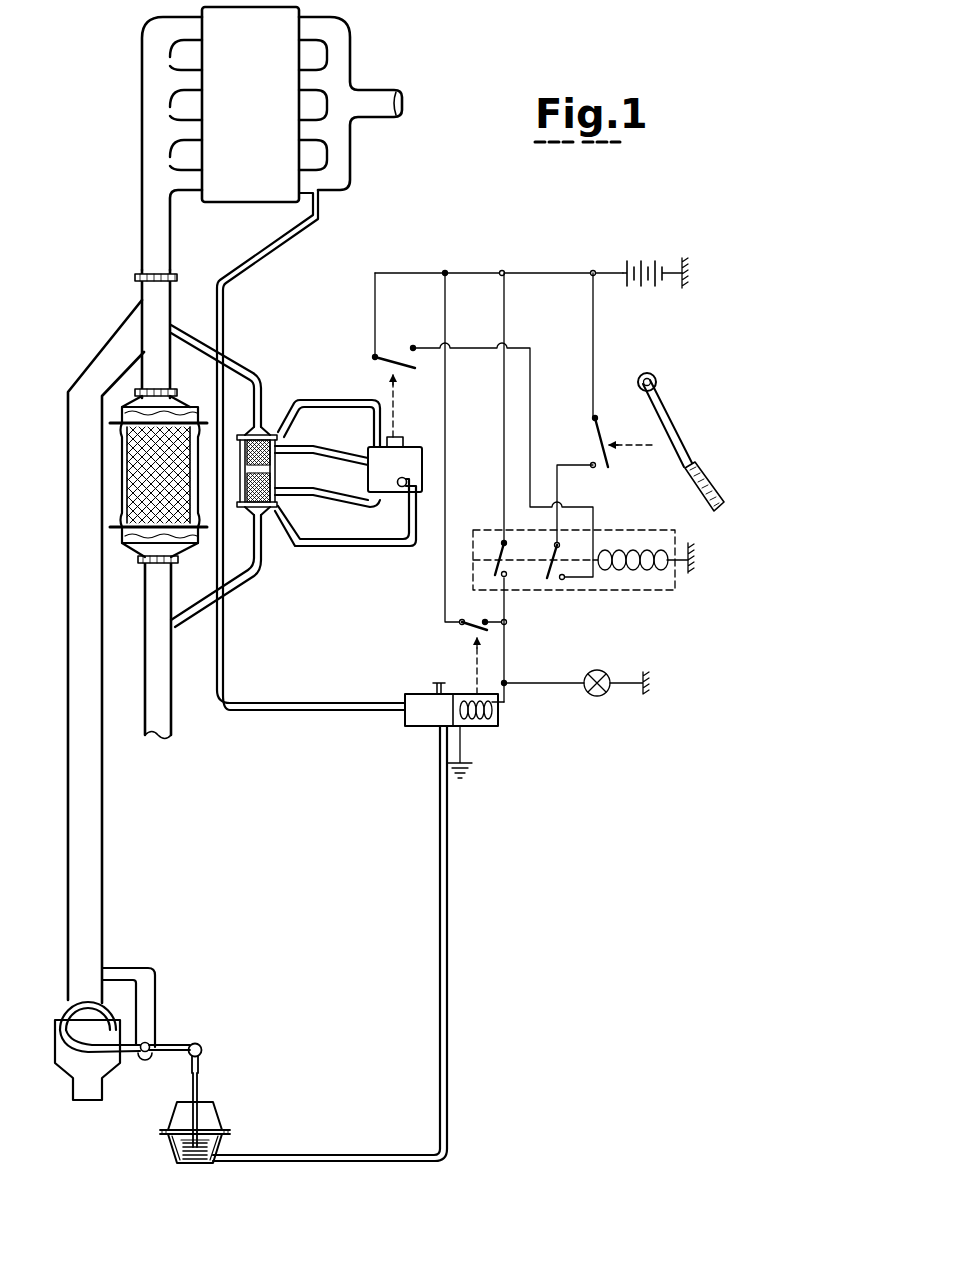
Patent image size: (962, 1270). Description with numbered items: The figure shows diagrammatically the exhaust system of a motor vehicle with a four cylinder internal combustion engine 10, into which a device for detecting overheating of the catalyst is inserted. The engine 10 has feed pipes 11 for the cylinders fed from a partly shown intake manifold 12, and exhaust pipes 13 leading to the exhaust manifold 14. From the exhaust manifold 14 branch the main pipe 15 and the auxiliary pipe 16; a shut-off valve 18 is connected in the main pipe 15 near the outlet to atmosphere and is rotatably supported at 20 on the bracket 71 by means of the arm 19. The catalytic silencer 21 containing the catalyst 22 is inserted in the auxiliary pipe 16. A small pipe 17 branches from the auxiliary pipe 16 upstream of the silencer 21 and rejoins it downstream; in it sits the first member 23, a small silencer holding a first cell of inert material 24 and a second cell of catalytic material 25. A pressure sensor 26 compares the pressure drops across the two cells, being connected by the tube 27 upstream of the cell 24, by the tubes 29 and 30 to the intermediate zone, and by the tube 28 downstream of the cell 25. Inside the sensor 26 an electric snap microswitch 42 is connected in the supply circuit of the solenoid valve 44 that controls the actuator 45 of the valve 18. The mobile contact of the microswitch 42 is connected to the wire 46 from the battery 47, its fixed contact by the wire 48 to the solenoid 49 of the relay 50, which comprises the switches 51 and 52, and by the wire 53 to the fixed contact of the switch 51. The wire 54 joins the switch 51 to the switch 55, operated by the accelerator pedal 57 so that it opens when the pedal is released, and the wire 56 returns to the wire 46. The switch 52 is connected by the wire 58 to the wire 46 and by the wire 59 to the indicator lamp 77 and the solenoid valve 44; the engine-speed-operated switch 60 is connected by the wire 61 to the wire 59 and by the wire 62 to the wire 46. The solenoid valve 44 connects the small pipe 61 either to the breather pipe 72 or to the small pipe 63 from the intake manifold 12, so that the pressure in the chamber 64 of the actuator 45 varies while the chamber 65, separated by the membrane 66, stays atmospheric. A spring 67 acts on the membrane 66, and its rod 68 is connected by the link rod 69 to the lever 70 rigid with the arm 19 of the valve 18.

The internal combustion engine 10 is at (249, 208).
The feed pipes 11 is at (334, 173).
The intake manifold 12 is at (380, 98).
The exhaust pipes 13 is at (142, 47).
The exhaust manifold 14 is at (142, 235).
The main pipe 15 is at (96, 366).
The auxiliary pipe 16 is at (163, 366).
The small pipe 17 is at (242, 366).
The shut-off valve 18 is at (87, 1001).
The arm 19 is at (95, 1045).
The rotatable support 20 is at (150, 1042).
The catalytic silencer 21 is at (122, 548).
The catalyst 22 is at (140, 487).
The first member 23 is at (245, 519).
The first cell of inert material 24 is at (246, 452).
The second cell of catalytic material 25 is at (262, 512).
The pressure sensor 26 is at (420, 440).
The tube 27 is at (286, 398).
The tube 28 is at (318, 540).
The tube 29 is at (316, 445).
The tube 30 is at (314, 490).
The electric snap microswitch 42 is at (395, 352).
The solenoid valve 44 is at (480, 735).
The actuator 45 is at (164, 1140).
The wire 46 is at (413, 272).
The battery 47 is at (643, 268).
The wire 48 is at (530, 390).
The solenoid 49 is at (636, 573).
The relay 50 is at (679, 597).
The switch 51 is at (566, 582).
The switch 52 is at (488, 562).
The wire 53 is at (587, 580).
The wire 54 is at (557, 478).
The switch 55 is at (603, 474).
The wire 56 is at (596, 334).
The accelerator pedal 57 is at (654, 408).
The wire 58 is at (504, 308).
The wire 59 is at (505, 666).
The switch 60 is at (471, 630).
The small pipe 61 is at (333, 1154).
The wire 62 is at (445, 565).
The small pipe 63 is at (325, 702).
The chamber 64 is at (176, 1152).
The chamber 65 is at (212, 1118).
The membrane 66 is at (214, 1147).
The spring 67 is at (194, 1164).
The rod 68 is at (192, 1083).
The link rod 69 is at (200, 1063).
The lever 70 is at (176, 1047).
The bracket 71 is at (128, 972).
The breather pipe 72 is at (434, 684).
The indicator lamp 77 is at (598, 699).